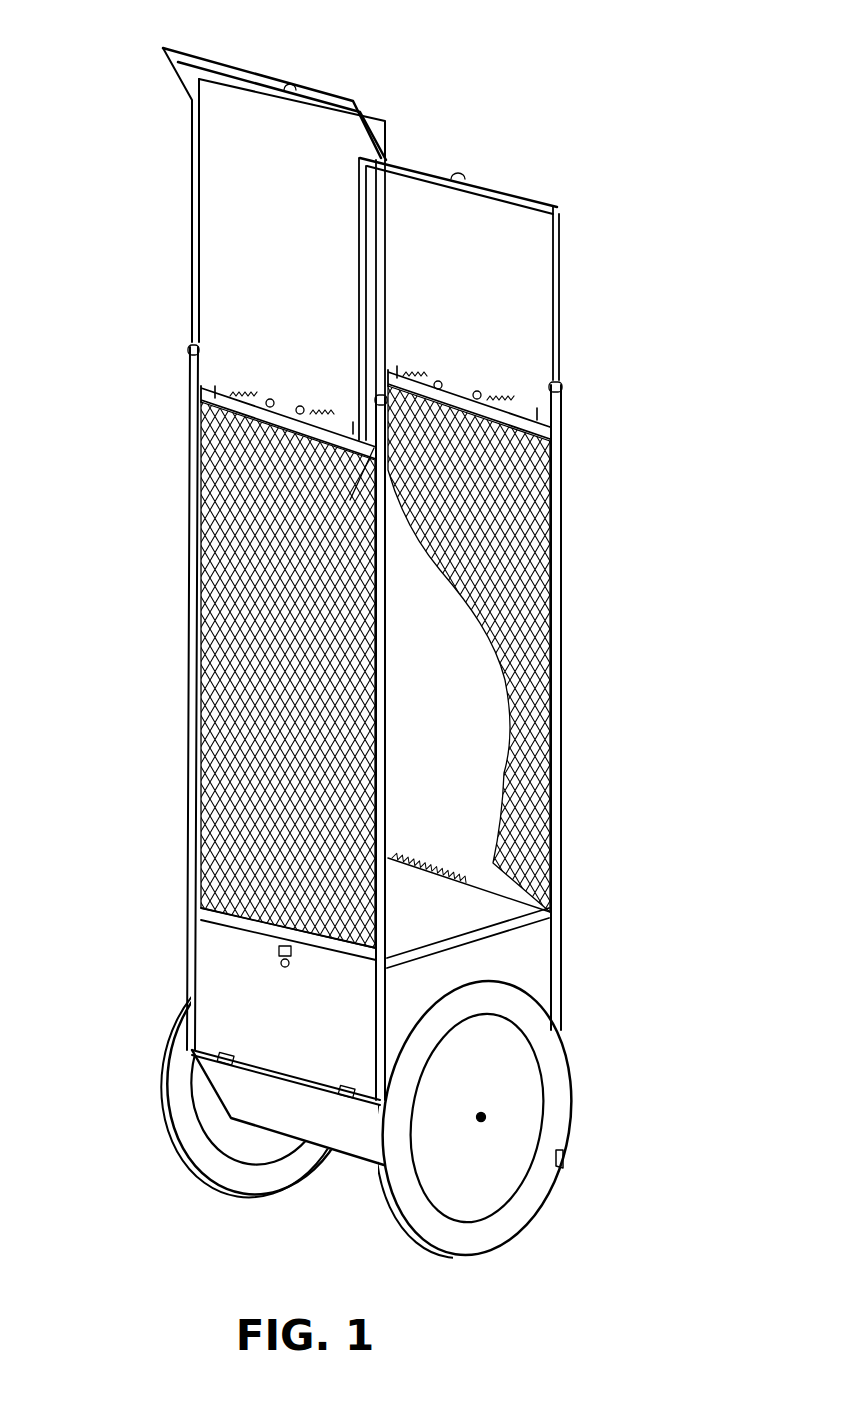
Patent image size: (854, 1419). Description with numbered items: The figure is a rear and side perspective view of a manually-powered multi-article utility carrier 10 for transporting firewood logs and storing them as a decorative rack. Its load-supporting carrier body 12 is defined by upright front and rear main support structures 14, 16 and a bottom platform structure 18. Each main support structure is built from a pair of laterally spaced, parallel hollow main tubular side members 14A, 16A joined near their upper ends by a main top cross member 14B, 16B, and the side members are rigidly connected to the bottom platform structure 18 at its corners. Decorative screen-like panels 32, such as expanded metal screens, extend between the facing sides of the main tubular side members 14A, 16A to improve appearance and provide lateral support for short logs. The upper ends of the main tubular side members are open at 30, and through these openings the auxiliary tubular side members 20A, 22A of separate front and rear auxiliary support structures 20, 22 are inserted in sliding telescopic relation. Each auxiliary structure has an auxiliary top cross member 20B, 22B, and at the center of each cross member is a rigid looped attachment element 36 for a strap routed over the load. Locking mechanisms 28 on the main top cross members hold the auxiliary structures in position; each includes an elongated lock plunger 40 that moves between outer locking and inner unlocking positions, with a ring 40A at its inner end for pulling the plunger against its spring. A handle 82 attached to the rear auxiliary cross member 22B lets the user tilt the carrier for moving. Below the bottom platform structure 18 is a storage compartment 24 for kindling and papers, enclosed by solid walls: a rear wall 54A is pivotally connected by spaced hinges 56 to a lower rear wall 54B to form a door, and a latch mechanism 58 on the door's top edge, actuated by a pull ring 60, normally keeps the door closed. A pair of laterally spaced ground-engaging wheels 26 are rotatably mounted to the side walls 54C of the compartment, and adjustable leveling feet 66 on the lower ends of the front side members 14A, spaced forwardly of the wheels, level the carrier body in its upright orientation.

The utility carrier 10 is at (605, 158).
The carrier body 12 is at (560, 710).
The front main support structure 14 is at (521, 735).
The main tubular side members 14A is at (552, 817).
The main top cross member 14B is at (548, 428).
The rear main support structure 16 is at (223, 698).
The main tubular side members 16A is at (193, 703).
The main top cross member 16B is at (217, 407).
The bottom platform structure 18 is at (453, 923).
The front auxiliary support structure 20 is at (478, 285).
The auxiliary tubular side members 20A is at (358, 215).
The auxiliary top cross member 20B is at (517, 195).
The rear auxiliary support structure 22 is at (261, 189).
The auxiliary tubular side members 22A is at (190, 218).
The auxiliary top cross member 22B is at (320, 113).
The storage compartment 24 is at (338, 1155).
The ground-engaging wheels 26 is at (190, 1160).
The locking mechanisms 28 is at (282, 390).
The open upper ends 30 is at (193, 345).
The screen-like panels 32 is at (225, 603).
The attachment element 36 is at (290, 85).
The lock plunger 40 is at (215, 392).
The ring 40A is at (303, 408).
The rear wall door 54A is at (285, 1012).
The lower rear wall 54B is at (286, 1089).
The side walls 54C is at (424, 985).
The hinges 56 is at (343, 1088).
The latch mechanism 58 is at (305, 953).
The pull ring 60 is at (283, 965).
The adjustable leveling feet 66 is at (564, 1157).
The handle 82 is at (332, 92).